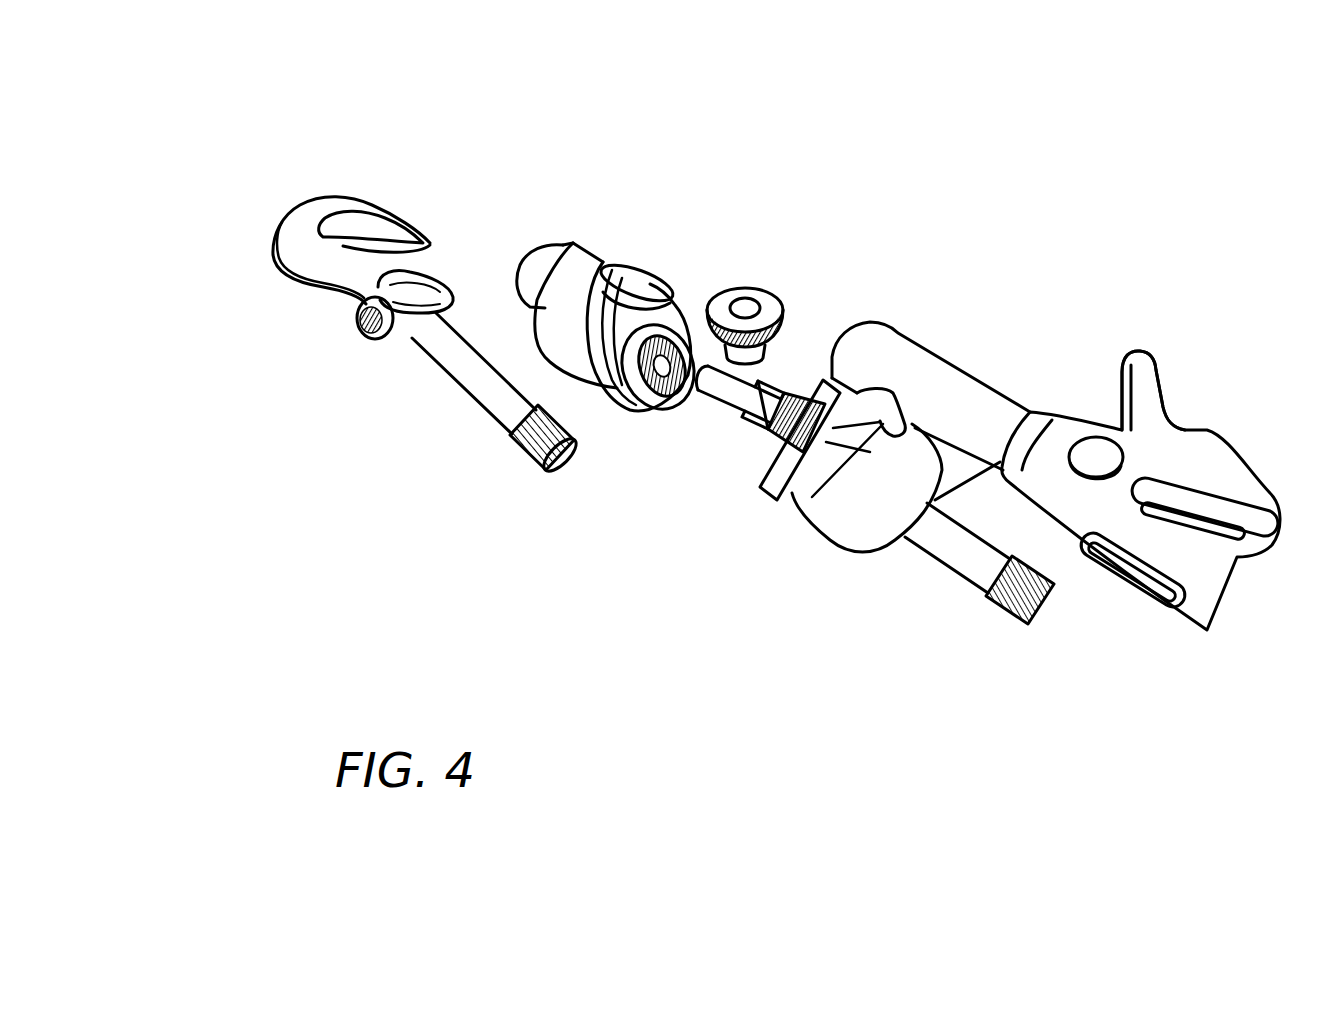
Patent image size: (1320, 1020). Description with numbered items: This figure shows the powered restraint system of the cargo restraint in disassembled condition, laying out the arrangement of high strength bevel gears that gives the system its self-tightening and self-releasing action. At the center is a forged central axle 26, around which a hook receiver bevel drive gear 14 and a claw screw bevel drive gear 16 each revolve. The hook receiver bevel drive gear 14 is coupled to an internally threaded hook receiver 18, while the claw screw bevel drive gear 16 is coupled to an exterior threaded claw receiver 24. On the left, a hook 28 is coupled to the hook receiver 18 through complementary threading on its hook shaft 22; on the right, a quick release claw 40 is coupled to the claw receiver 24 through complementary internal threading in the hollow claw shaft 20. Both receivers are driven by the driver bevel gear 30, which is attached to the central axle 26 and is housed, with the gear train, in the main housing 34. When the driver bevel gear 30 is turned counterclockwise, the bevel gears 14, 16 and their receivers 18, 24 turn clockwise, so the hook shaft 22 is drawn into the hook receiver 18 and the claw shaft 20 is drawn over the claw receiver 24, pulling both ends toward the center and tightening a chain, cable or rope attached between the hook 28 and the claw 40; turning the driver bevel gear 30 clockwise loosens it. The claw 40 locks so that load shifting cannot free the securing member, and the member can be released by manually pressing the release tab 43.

The hook receiver bevel drive gear 14 is at (660, 403).
The claw screw bevel drive gear 16 is at (760, 455).
The hook receiver 18 is at (560, 243).
The claw shaft 20 is at (960, 375).
The hook shaft 22 is at (450, 368).
The claw receiver 24 is at (947, 572).
The central axle 26 is at (767, 370).
The hook 28 is at (332, 190).
The driver bevel gear 30 is at (768, 288).
The main housing 34 is at (663, 282).
The claw 40 is at (1203, 627).
The release tab 43 is at (1160, 378).